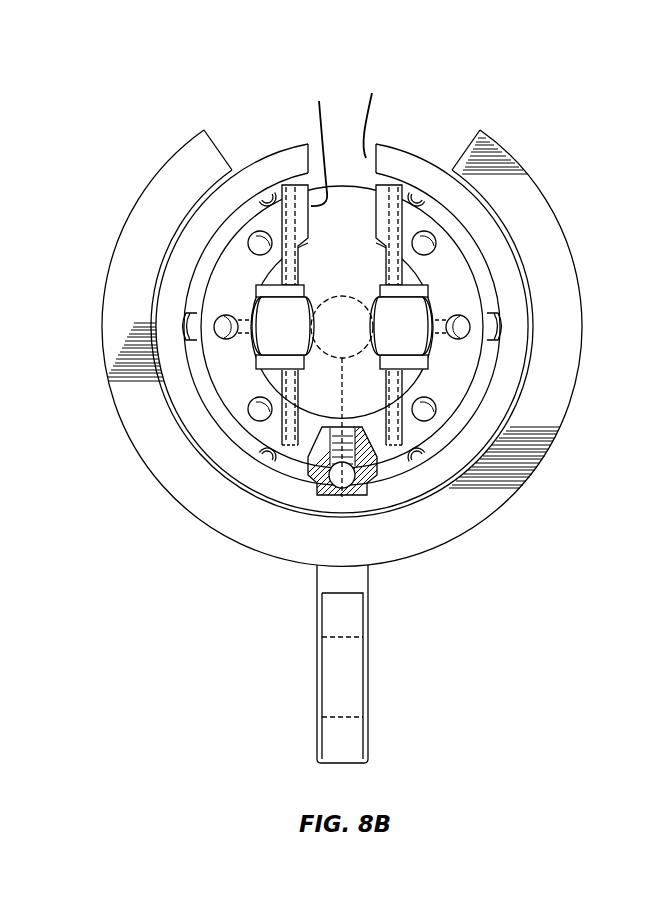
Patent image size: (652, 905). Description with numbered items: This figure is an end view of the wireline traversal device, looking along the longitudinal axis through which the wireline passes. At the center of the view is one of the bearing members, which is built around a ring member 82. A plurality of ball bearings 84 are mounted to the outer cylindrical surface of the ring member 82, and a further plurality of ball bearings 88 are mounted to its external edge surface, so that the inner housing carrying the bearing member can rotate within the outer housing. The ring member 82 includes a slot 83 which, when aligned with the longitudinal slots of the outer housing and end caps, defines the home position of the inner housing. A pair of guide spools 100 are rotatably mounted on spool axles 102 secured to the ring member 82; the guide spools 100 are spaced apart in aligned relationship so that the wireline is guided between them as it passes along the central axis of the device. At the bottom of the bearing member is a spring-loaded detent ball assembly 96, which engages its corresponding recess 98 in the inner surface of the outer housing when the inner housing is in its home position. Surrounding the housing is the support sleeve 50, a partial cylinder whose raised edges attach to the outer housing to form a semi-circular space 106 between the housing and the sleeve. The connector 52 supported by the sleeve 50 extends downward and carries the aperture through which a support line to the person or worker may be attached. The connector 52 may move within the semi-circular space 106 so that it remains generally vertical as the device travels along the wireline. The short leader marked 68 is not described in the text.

The support sleeve 50 is at (563, 342).
The connector 52 is at (368, 692).
The slot 68 is at (372, 112).
The ring member 82 is at (452, 372).
The slot 83 is at (318, 138).
The ball bearings 84 is at (268, 190).
The ball bearings 88 is at (187, 322).
The spring-loaded detent ball assembly 96 is at (377, 470).
The recess 98 is at (341, 489).
The guide spools 100 is at (256, 347).
The spool axles 102 is at (392, 187).
The semi-circular space 106 is at (0, 232).